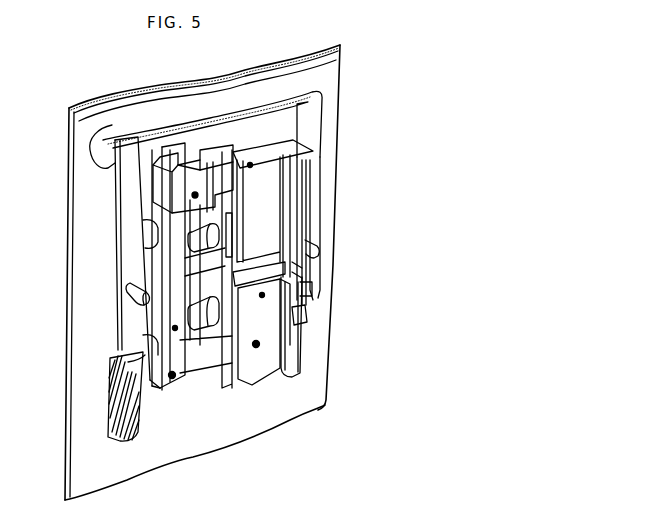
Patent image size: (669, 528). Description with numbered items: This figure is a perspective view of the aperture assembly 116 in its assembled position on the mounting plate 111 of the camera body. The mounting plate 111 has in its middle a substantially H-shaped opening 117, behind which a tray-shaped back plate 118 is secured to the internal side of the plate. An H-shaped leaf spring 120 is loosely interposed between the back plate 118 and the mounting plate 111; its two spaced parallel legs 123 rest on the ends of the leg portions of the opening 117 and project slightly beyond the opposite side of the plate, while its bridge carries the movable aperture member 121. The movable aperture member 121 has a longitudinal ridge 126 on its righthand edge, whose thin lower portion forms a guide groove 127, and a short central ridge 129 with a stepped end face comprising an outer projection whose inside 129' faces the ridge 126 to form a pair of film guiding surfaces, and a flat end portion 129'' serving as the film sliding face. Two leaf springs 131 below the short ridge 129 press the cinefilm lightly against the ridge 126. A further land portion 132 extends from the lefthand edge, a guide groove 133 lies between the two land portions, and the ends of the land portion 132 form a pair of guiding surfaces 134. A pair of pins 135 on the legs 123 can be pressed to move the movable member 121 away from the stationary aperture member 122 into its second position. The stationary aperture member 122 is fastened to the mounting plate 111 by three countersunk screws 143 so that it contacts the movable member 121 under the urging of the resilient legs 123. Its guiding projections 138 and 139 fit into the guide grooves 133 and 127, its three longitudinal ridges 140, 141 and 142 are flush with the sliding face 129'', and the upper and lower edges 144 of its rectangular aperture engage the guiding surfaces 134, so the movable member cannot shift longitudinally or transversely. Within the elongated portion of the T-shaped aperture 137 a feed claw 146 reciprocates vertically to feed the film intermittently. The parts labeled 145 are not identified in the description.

The mounting plate 111 is at (76, 272).
The aperture assembly 116 is at (392, 66).
The substantially H-shaped opening 117 is at (110, 262).
The tray-shaped back plate 118 is at (157, 140).
The H-shaped leaf spring 120 is at (125, 290).
The movable aperture member 121 is at (312, 214).
The stationary aperture member 122 is at (300, 193).
The legs 123 is at (307, 118).
The longitudinal ridge 126 is at (298, 160).
The guide groove 127 is at (300, 289).
The short longitudinal ridge 129 is at (193, 151).
The inside of outer projection 129' is at (254, 209).
The flat end portion 129'' is at (199, 150).
The leaf springs 131 is at (233, 247).
The land portion 132 is at (193, 372).
The guide groove 133 is at (228, 297).
The guiding surfaces 134 is at (150, 220).
The pins 135 is at (130, 302).
The T-shaped aperture 137 is at (245, 352).
The guiding projection 138 is at (228, 280).
The guiding projection 139 is at (310, 307).
The longitudinal ridge 140 is at (293, 163).
The longitudinal ridge 141 is at (245, 160).
The longitudinal ridge 142 is at (142, 385).
The countersunk screws 143 is at (190, 195).
The upper and lower edges 144 is at (145, 243).
The pins 145 is at (252, 163).
The feed claw 146 is at (308, 268).